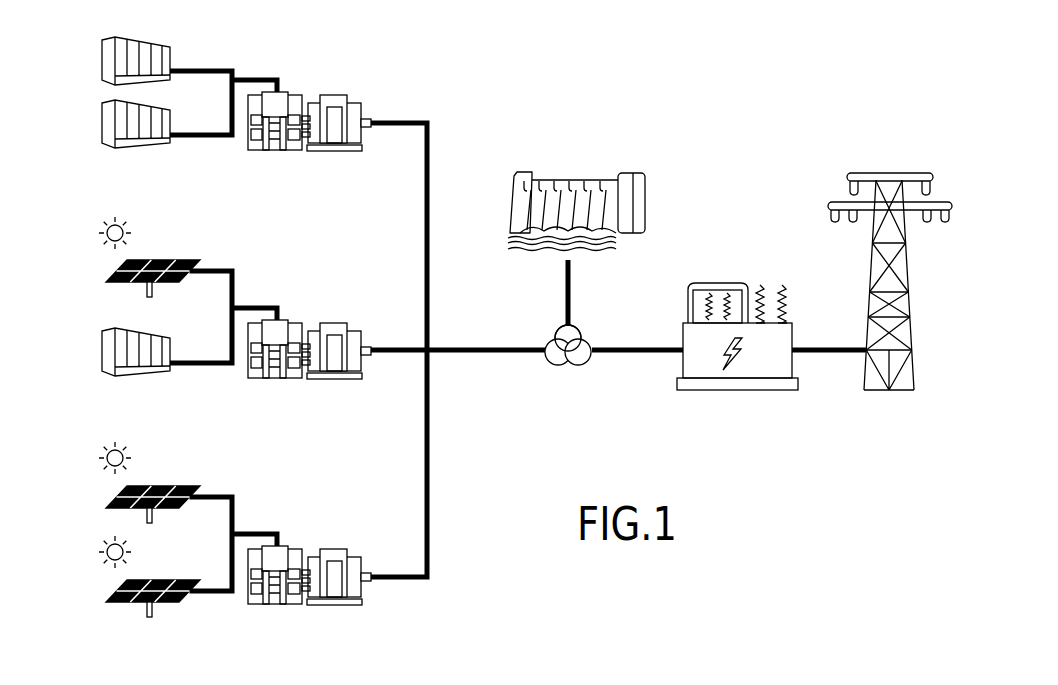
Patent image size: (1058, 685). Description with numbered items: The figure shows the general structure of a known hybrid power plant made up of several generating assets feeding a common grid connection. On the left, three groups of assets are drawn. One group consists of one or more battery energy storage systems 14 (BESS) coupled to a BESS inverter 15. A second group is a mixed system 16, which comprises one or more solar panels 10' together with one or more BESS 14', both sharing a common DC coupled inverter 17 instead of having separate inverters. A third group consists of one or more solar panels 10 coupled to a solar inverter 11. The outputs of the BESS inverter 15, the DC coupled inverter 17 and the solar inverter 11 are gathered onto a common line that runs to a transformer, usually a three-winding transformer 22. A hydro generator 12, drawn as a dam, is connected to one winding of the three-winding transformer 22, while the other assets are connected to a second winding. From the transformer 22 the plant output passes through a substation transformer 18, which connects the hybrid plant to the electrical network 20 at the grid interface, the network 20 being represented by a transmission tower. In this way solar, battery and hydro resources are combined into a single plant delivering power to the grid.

The solar panel 10 is at (121, 529).
The solar panel 10' is at (174, 248).
The solar inverter 11 is at (330, 535).
The hydro generator 12 is at (655, 193).
The battery energy storage system 14 is at (106, 92).
The BESS 14' is at (159, 378).
The BESS inverter 15 is at (332, 72).
The mixed system 16 is at (147, 314).
The DC coupled inverter 17 is at (332, 310).
The substation transformer 18 is at (732, 403).
The electrical network 20 is at (888, 395).
The 3 windings transformer 22 is at (552, 365).